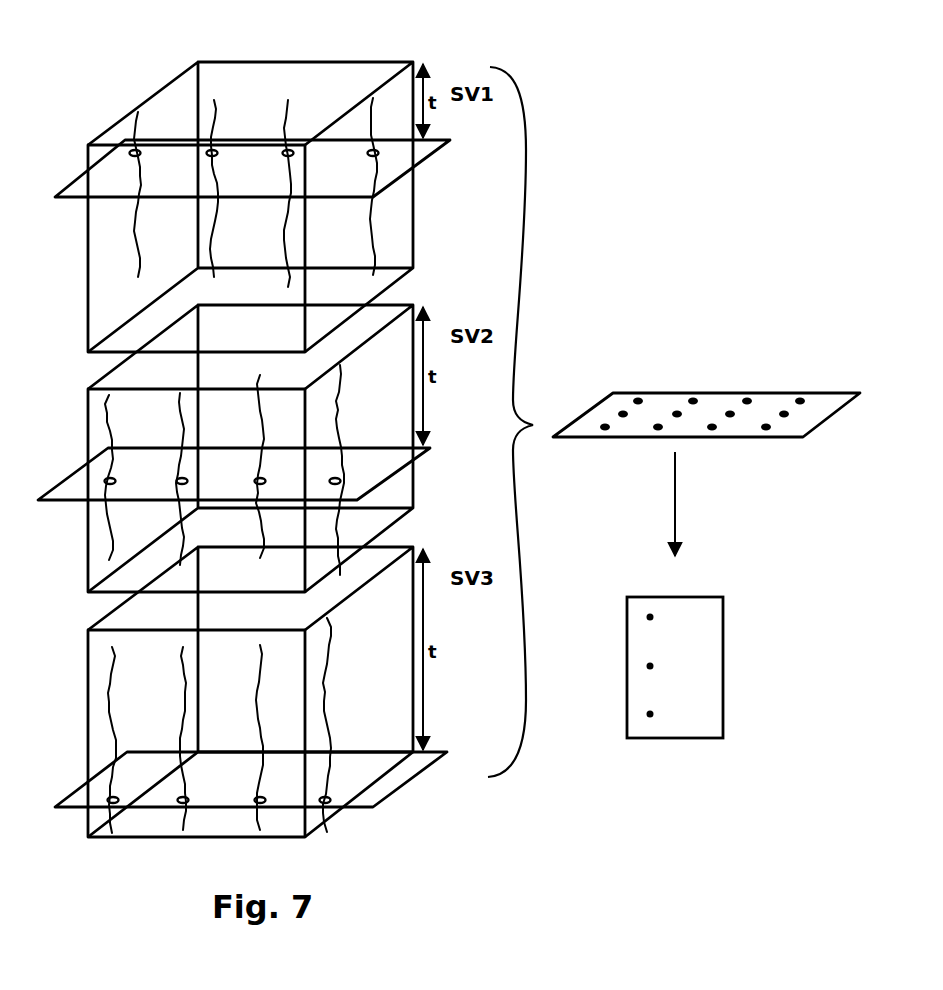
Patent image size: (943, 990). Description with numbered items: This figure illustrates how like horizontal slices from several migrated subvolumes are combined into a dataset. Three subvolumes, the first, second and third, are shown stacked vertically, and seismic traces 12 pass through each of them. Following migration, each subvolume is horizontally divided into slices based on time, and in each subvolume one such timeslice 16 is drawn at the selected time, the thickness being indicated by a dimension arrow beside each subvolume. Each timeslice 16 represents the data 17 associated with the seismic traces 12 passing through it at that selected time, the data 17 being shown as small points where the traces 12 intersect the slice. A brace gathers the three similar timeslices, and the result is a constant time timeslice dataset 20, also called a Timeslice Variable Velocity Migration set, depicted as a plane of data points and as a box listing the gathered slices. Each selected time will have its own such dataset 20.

The seismic traces 12 is at (143, 122).
The timeslice 16 is at (74, 184).
The data 17 is at (378, 155).
The constant time timeslice dataset 20 is at (720, 392).